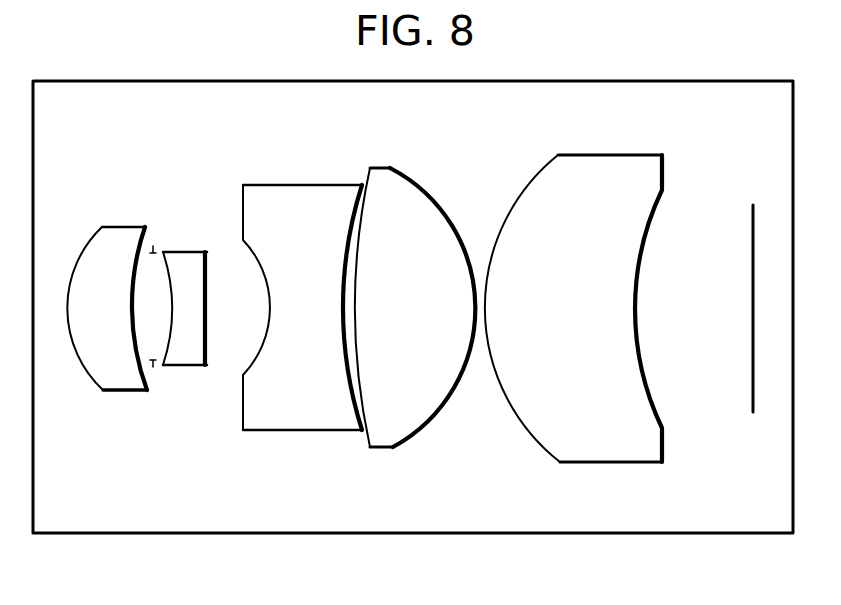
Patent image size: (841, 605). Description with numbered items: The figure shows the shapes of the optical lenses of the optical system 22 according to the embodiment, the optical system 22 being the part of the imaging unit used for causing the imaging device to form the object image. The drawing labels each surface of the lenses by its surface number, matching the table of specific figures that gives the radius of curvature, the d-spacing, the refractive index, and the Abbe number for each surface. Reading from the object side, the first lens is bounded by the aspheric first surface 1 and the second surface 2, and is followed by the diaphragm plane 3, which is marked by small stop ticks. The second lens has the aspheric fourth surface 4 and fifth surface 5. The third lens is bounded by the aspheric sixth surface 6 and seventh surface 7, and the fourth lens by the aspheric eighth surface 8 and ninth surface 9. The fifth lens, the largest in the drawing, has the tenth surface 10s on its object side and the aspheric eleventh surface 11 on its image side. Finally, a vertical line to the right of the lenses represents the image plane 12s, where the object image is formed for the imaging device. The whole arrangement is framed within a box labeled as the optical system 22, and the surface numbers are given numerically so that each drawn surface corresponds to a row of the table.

The first lens surface 1 is at (107, 308).
The second lens surface 2 is at (128, 308).
The diaphragm plane 3 is at (157, 324).
The fourth lens surface 4 is at (178, 308).
The fifth lens surface 5 is at (215, 308).
The sixth lens surface 6 is at (302, 307).
The seventh lens surface 7 is at (341, 307).
The eighth lens surface 8 is at (374, 307).
The ninth lens surface 9 is at (432, 307).
The tenth lens surface 10s is at (573, 308).
The eleventh lens surface 11 is at (631, 308).
The image plane 12s is at (751, 325).
The optical system 22 is at (722, 80).